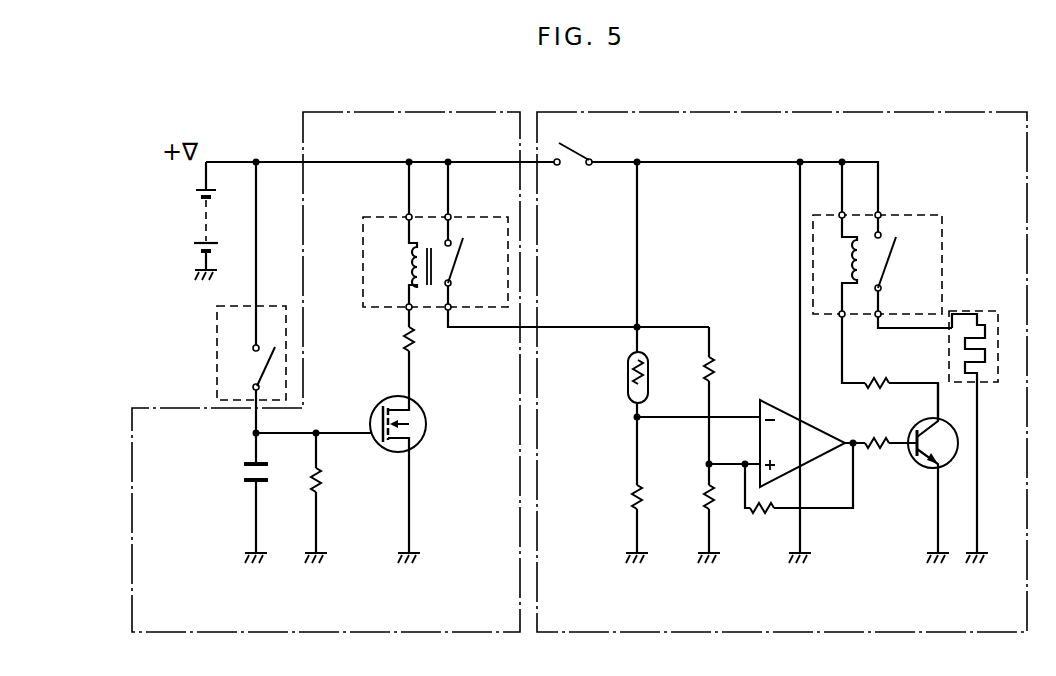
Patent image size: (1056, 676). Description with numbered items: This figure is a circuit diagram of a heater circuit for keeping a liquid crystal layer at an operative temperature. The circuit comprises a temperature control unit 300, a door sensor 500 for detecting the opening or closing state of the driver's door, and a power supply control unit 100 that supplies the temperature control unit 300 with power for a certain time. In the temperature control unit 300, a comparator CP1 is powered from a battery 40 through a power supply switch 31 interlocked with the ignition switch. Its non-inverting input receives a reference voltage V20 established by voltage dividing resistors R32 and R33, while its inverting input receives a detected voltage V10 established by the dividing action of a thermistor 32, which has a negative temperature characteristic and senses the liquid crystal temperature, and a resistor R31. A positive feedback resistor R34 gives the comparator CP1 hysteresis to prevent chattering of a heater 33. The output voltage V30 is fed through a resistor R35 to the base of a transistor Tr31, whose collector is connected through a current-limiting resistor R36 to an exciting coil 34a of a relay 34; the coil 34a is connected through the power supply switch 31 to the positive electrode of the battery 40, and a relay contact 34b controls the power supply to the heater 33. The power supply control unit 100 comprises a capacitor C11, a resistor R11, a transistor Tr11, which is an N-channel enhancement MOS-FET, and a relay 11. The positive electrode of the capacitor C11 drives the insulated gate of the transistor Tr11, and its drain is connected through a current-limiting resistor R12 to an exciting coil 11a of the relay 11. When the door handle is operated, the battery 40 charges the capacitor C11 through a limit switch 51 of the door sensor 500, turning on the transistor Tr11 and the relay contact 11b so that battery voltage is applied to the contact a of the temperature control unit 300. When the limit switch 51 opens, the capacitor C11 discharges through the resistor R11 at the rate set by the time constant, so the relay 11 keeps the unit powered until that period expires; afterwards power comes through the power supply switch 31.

The power supply control unit 100 is at (466, 112).
The temperature control unit 300 is at (962, 112).
The power supply switch 31 is at (587, 155).
The thermistor 32 is at (628, 376).
The heater 33 is at (985, 311).
The relay 34 is at (841, 239).
The exciting coil 34a is at (841, 262).
The relay contact 34b is at (890, 258).
The battery 40 is at (203, 219).
The door sensor 500 is at (207, 297).
The limit switch 51 is at (258, 369).
The relay 11 is at (432, 236).
The exciting coil 11a is at (402, 268).
The relay contact 11b is at (461, 262).
The resistor R11 is at (324, 476).
The current-limiting resistor R12 is at (400, 340).
The capacitor C11 is at (244, 474).
The transistor Tr11 is at (424, 437).
The contact a is at (636, 326).
The resistor R31 is at (632, 494).
The voltage dividing resistor R32 is at (735, 357).
The voltage dividing resistor R33 is at (704, 505).
The positive feedback resistor R34 is at (763, 518).
The resistor R35 is at (877, 452).
The current-limiting resistor R36 is at (897, 359).
The comparator CP1 is at (802, 443).
The transistor Tr31 is at (932, 468).
The detected voltage V10 is at (677, 417).
The reference voltage V20 is at (732, 460).
The output voltage V30 is at (852, 442).